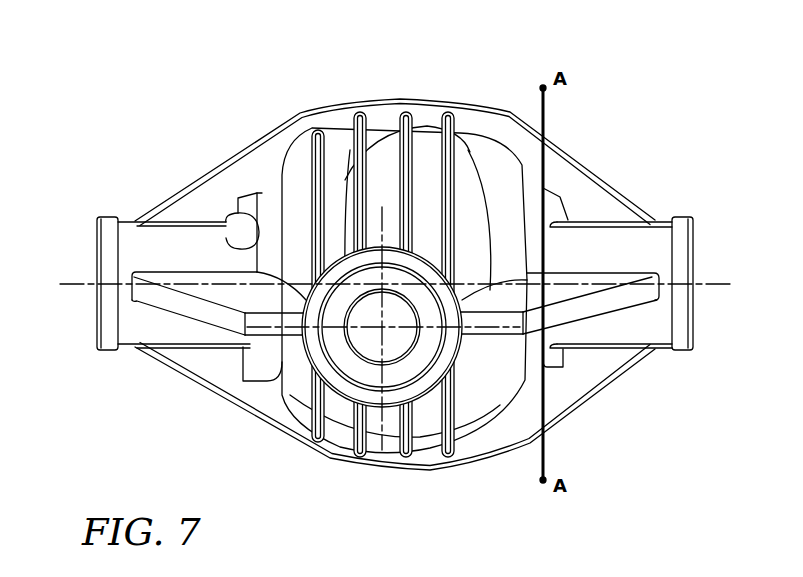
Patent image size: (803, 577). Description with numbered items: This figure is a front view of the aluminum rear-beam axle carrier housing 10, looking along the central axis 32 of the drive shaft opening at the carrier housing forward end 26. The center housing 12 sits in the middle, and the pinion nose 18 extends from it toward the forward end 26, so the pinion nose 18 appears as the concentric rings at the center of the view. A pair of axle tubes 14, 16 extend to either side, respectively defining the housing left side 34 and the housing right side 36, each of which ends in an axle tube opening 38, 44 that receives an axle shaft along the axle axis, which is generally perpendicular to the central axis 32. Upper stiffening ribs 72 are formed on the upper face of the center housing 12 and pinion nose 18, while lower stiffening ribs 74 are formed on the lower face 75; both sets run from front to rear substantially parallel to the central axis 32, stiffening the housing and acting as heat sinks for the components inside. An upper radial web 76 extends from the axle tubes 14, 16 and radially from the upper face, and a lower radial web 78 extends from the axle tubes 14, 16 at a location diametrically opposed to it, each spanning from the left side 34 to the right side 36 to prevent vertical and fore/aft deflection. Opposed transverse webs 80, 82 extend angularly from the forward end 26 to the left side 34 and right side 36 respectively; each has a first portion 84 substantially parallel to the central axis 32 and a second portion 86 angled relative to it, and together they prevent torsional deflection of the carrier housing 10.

The axle carrier housing 10 is at (660, 106).
The center housing 12 is at (512, 415).
The axle tube 14 is at (640, 327).
The axle tube 16 is at (140, 243).
The pinion nose 18 is at (300, 368).
The carrier housing forward end 26 is at (437, 368).
The central axis 32 is at (385, 327).
The housing left side 34 is at (698, 210).
The housing right side 36 is at (97, 212).
The axle tube opening 38 is at (703, 263).
The axle tube opening 44 is at (89, 262).
The upper stiffening ribs 72 is at (320, 130).
The lower stiffening ribs 74 is at (320, 443).
The lower face 75 is at (392, 446).
The upper radial web 76 is at (566, 137).
The lower radial web 78 is at (562, 430).
The transverse web 80 is at (575, 317).
The transverse web 82 is at (218, 322).
The first portion 84 is at (250, 333).
The second portion 86 is at (167, 302).